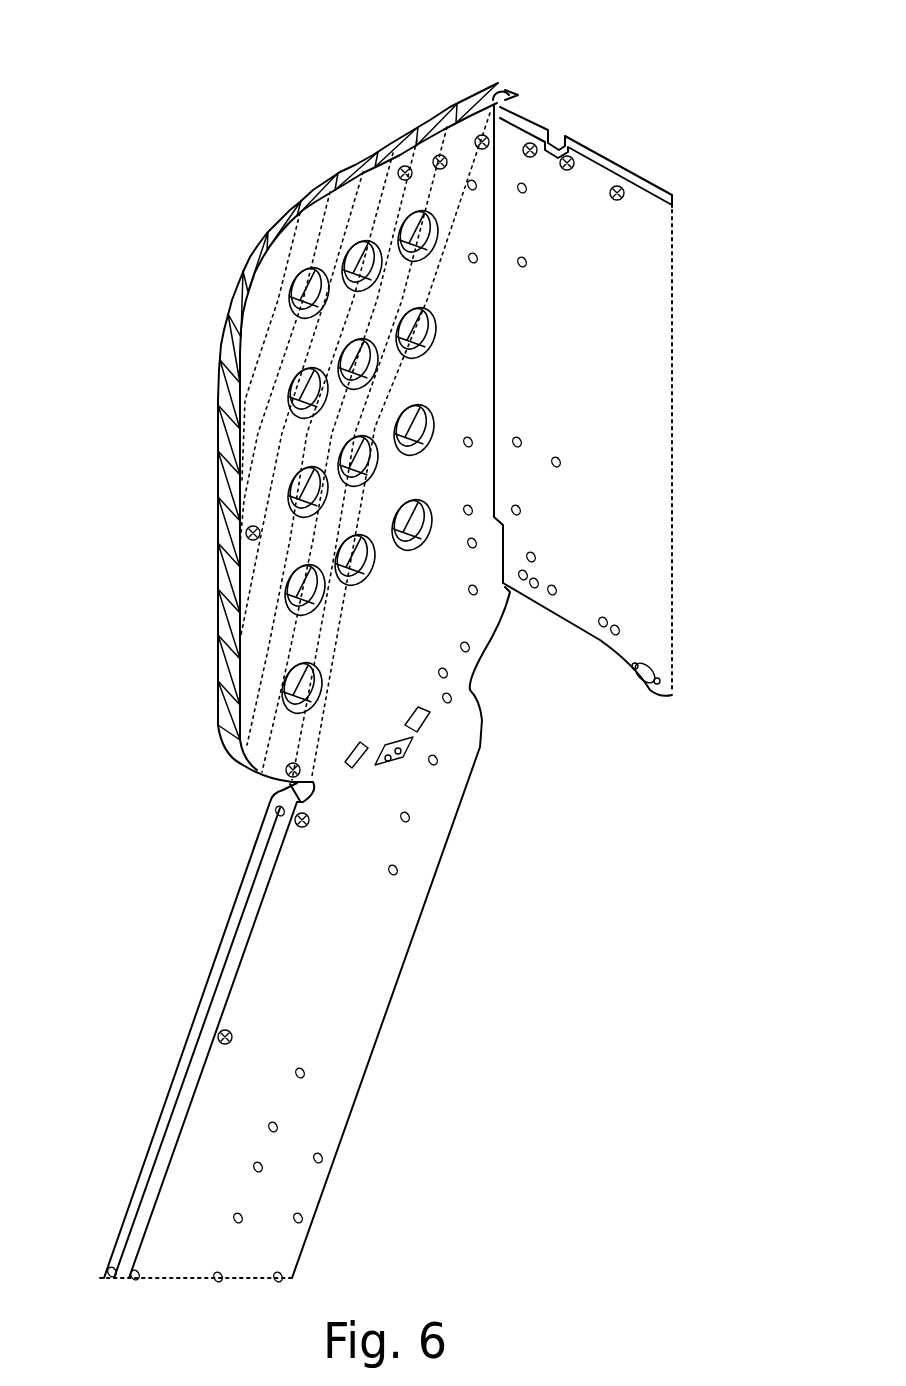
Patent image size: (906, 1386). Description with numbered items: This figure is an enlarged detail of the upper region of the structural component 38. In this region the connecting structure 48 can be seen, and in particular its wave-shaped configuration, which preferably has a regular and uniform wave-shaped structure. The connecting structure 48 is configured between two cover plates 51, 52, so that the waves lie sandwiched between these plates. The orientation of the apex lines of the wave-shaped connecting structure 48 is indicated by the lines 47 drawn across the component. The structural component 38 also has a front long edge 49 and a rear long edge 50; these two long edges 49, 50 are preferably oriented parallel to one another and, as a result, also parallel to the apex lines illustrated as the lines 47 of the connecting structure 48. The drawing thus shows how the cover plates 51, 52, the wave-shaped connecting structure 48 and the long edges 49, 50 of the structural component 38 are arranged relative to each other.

The structural component 38 is at (243, 1075).
The lines 47 is at (362, 205).
The connecting structure 48 is at (512, 77).
The front long edge 49 is at (247, 859).
The rear long edge 50 is at (418, 944).
The cover plate 51 is at (425, 613).
The cover plate 52 is at (200, 590).